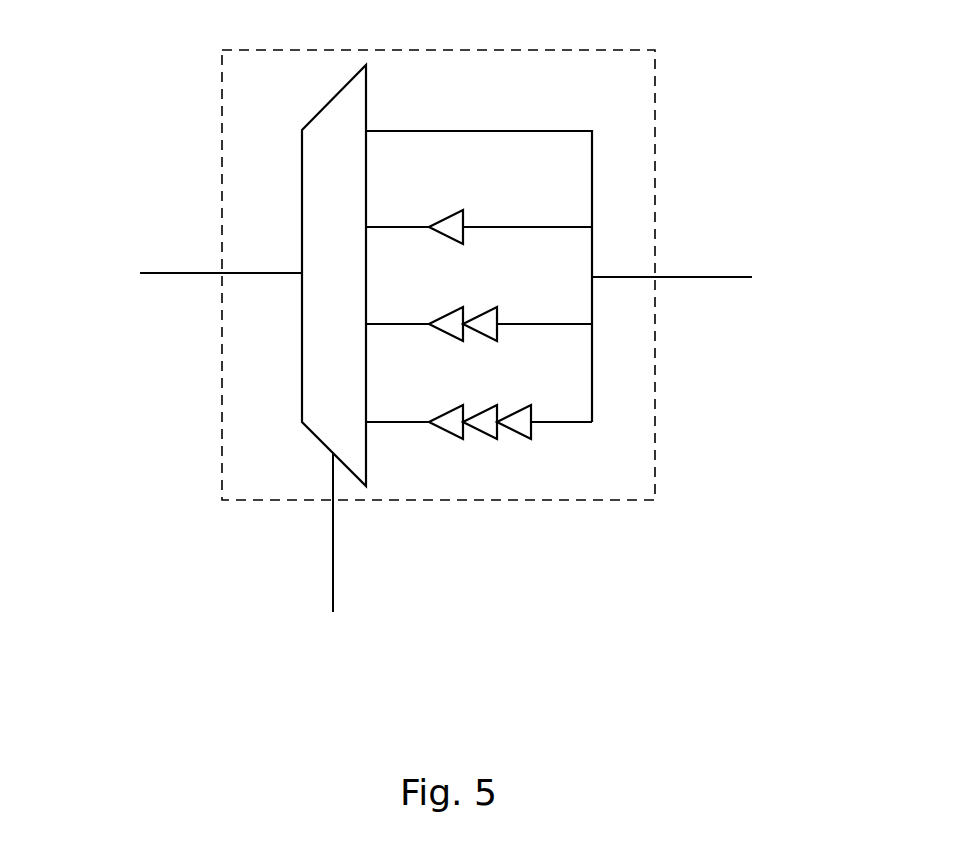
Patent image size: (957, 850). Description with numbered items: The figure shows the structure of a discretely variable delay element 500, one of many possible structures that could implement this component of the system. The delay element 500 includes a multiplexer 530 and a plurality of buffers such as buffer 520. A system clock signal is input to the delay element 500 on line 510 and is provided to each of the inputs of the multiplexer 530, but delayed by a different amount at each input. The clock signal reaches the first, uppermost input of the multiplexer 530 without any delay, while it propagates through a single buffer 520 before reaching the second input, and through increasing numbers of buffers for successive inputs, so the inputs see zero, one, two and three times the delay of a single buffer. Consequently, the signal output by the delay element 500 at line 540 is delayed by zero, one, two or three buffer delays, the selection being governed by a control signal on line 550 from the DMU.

The delay element 500 is at (657, 68).
The line 510 is at (677, 272).
The buffer 520 is at (465, 212).
The multiplexer 530 is at (325, 103).
The line 540 is at (205, 278).
The control signal input from DMU 550 is at (338, 517).